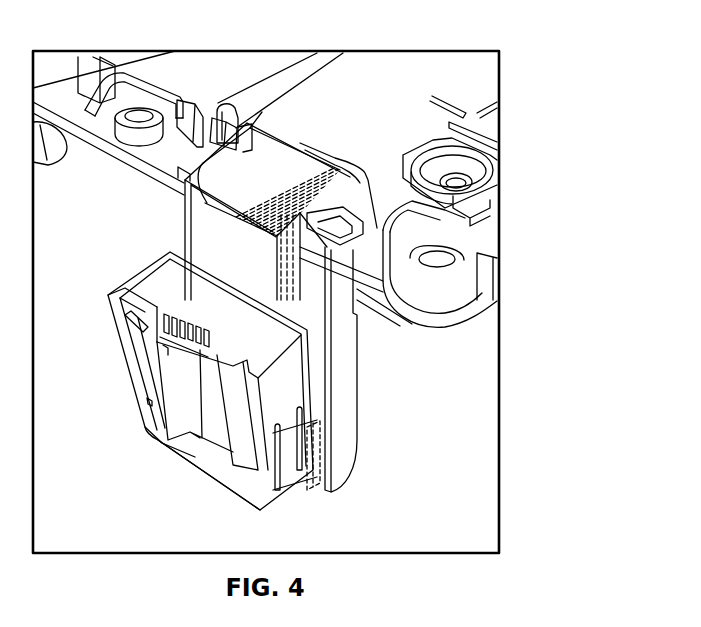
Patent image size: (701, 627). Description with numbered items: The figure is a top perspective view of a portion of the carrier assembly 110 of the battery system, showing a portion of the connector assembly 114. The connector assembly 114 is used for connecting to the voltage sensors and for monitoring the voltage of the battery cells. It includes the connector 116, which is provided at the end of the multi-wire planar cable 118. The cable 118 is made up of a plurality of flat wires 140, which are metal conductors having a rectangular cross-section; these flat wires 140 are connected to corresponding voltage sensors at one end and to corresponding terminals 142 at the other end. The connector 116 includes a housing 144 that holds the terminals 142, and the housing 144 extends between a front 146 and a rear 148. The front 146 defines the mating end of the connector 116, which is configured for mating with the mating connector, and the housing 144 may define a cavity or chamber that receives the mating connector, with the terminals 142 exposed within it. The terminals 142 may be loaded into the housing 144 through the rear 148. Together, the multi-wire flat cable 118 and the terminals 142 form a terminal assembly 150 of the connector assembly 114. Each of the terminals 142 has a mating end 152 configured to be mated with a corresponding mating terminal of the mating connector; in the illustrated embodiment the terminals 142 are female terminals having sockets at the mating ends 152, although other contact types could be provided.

The carrier assembly 110 is at (546, 298).
The connector assembly 114 is at (194, 394).
The connector 116 is at (232, 482).
The multi-wire planar cable 118 is at (200, 166).
The flat wires 140 is at (183, 197).
The terminals 142 is at (158, 320).
The housing 144 is at (145, 394).
The front 146 is at (113, 294).
The rear 148 is at (274, 497).
The terminal assembly 150 is at (293, 155).
The mating ends 152 is at (140, 323).